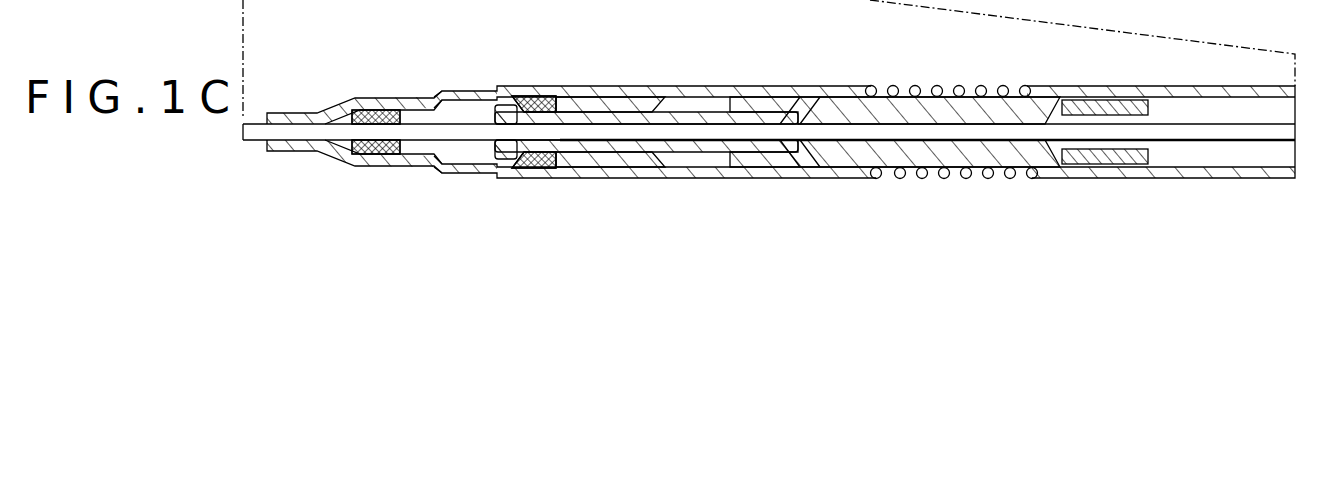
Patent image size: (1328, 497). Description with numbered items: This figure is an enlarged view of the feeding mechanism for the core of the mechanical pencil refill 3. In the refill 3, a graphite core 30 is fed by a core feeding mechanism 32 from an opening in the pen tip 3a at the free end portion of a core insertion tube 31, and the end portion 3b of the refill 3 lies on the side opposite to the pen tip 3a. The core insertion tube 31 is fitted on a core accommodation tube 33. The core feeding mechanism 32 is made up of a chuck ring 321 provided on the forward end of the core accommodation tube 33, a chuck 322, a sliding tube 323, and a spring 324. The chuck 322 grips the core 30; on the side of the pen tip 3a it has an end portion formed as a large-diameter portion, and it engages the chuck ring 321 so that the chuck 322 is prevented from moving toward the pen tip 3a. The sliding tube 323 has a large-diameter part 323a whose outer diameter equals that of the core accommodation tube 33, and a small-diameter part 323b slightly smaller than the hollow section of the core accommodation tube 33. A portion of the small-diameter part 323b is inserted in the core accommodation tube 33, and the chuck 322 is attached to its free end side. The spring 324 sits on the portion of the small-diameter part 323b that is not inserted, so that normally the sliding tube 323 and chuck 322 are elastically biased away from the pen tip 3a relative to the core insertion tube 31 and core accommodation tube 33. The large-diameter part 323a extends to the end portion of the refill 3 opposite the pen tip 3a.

The mechanical pencil refill 3 is at (781, 146).
The pen tip 3a is at (298, 113).
The end portion 3b is at (438, 92).
The graphite core 30 is at (257, 139).
The core insertion tube 31 is at (467, 91).
The core feeding mechanism 32 is at (824, 162).
The chuck ring 321 is at (547, 162).
The chuck 322 is at (748, 152).
The sliding tube 323 is at (855, 139).
The large-diameter part 323a is at (1125, 100).
The small-diameter part 323b is at (941, 106).
The spring 324 is at (952, 162).
The core accommodation tube 33 is at (682, 92).